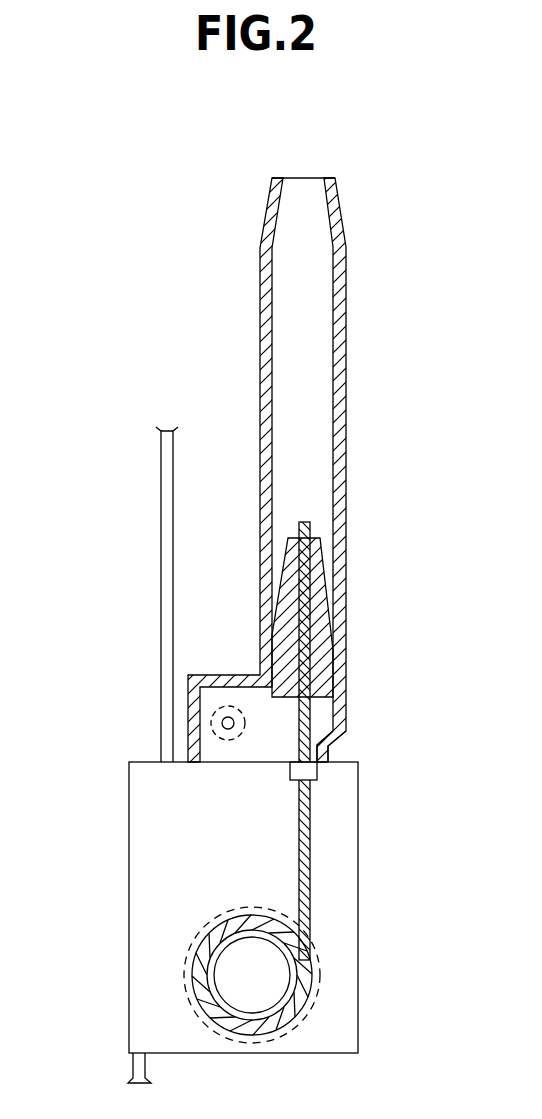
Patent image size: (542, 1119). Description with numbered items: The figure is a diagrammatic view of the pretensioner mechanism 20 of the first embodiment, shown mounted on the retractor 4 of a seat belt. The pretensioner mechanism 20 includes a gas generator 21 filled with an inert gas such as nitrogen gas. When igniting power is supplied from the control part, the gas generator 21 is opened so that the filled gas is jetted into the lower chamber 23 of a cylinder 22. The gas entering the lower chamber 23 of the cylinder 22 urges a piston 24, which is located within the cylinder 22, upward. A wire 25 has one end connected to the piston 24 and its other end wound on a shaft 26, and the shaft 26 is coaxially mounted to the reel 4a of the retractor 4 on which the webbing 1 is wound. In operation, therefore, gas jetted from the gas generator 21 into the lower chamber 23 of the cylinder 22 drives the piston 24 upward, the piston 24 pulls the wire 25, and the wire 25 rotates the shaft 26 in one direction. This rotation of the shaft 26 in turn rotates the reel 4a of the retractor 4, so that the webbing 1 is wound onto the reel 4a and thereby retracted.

The webbing 1 is at (163, 590).
The retractor 4 is at (143, 813).
The reel 4a is at (205, 930).
The pretensioner mechanism 20 is at (348, 532).
The gas generator 21 is at (229, 704).
The cylinder 22 is at (343, 388).
The lower chamber 23 is at (343, 732).
The piston 24 is at (325, 600).
The wire 25 is at (307, 722).
The shaft 26 is at (274, 965).